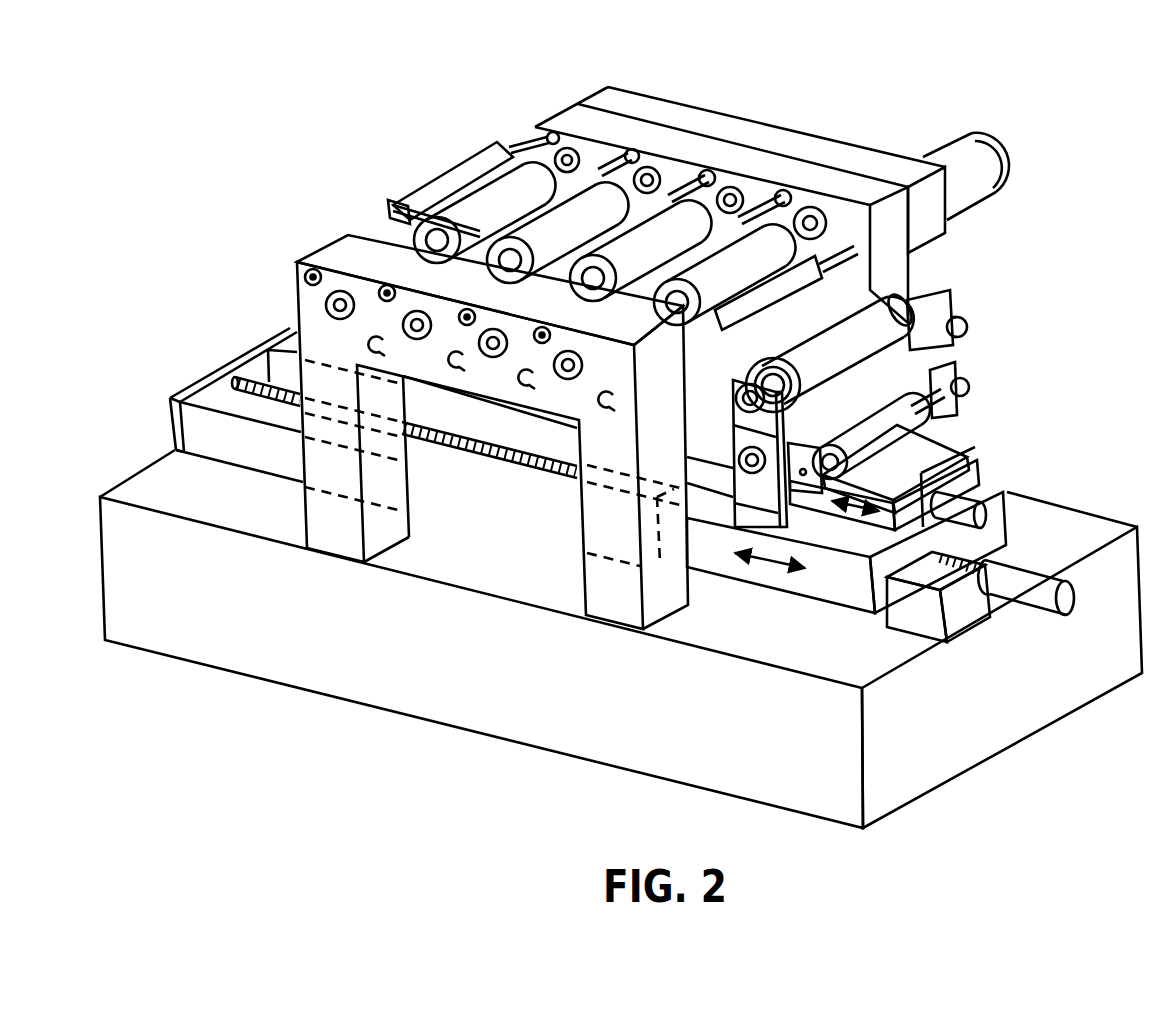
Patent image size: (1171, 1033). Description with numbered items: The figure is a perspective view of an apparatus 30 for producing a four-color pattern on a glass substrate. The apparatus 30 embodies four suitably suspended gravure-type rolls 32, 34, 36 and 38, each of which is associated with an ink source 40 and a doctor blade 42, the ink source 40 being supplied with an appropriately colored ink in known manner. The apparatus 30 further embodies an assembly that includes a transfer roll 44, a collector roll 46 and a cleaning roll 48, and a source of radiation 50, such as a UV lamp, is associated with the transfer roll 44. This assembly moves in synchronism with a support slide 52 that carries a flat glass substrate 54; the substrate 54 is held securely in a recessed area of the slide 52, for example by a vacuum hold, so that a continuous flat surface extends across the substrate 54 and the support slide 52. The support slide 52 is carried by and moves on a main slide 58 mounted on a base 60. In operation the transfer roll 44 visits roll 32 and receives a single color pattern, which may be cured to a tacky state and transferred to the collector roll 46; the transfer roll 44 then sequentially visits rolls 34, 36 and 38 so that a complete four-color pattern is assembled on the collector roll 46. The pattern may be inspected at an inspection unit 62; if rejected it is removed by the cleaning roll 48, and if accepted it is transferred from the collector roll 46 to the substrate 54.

The apparatus 30 is at (1150, 80).
The roll 32 is at (764, 237).
The roll 34 is at (690, 225).
The roll 36 is at (610, 210).
The roll 38 is at (490, 200).
The ink source 40 is at (668, 192).
The doctor blade 42 is at (802, 282).
The transfer roll 44 is at (831, 351).
The collector roll 46 is at (905, 385).
The cleaning roll 48 is at (968, 392).
The source of radiation 50 is at (950, 313).
The support slide 52 is at (965, 468).
The flat glass substrate 54 is at (925, 452).
The main slide 58 is at (852, 592).
The base 60 is at (621, 639).
The inspection unit 62 is at (422, 187).